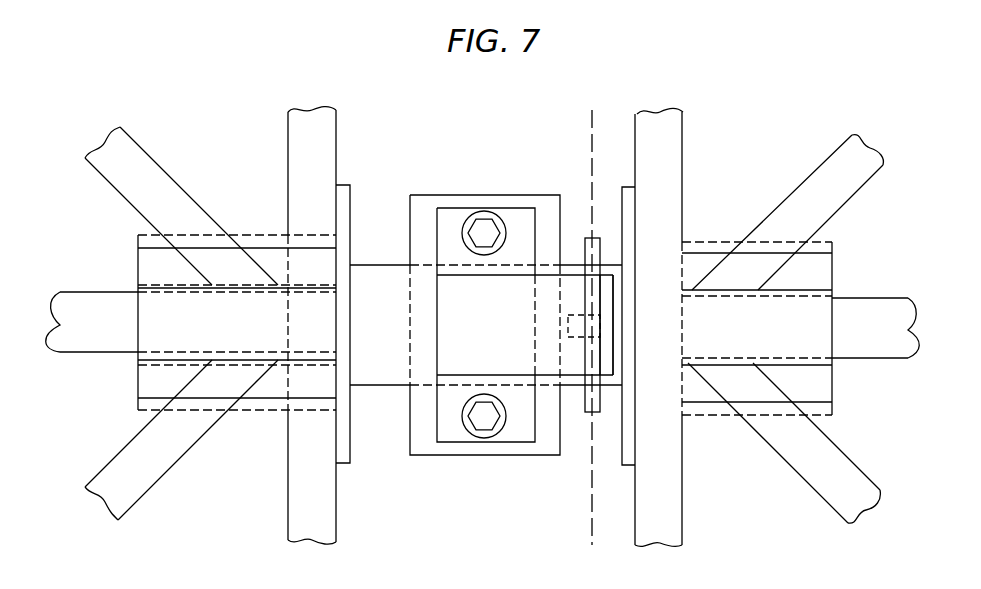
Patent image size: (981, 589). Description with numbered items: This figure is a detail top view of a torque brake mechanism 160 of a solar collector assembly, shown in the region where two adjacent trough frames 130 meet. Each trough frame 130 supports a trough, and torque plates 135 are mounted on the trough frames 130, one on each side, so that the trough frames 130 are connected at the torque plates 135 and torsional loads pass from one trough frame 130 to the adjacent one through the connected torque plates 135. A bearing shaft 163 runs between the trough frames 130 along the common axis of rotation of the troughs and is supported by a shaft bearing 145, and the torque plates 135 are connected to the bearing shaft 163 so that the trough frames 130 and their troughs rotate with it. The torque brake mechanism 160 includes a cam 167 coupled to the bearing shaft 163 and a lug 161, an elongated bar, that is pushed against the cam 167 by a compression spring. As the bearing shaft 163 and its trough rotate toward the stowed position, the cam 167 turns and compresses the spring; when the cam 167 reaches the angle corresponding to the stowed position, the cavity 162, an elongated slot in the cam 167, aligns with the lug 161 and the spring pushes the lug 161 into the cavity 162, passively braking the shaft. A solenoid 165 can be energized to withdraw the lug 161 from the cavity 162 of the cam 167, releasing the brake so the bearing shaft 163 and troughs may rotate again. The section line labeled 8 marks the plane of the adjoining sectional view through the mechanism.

The section line 8- 8 is at (592, 114).
The trough frame 130 is at (287, 505).
The torque plate 135 is at (342, 466).
The shaft bearing 145 is at (430, 195).
The torque brake mechanism 160 is at (692, 70).
The lug 161 is at (610, 316).
The cavity 162 is at (597, 316).
The bearing shaft 163 is at (378, 386).
The solenoid 165 is at (437, 272).
The cam 167 is at (593, 238).